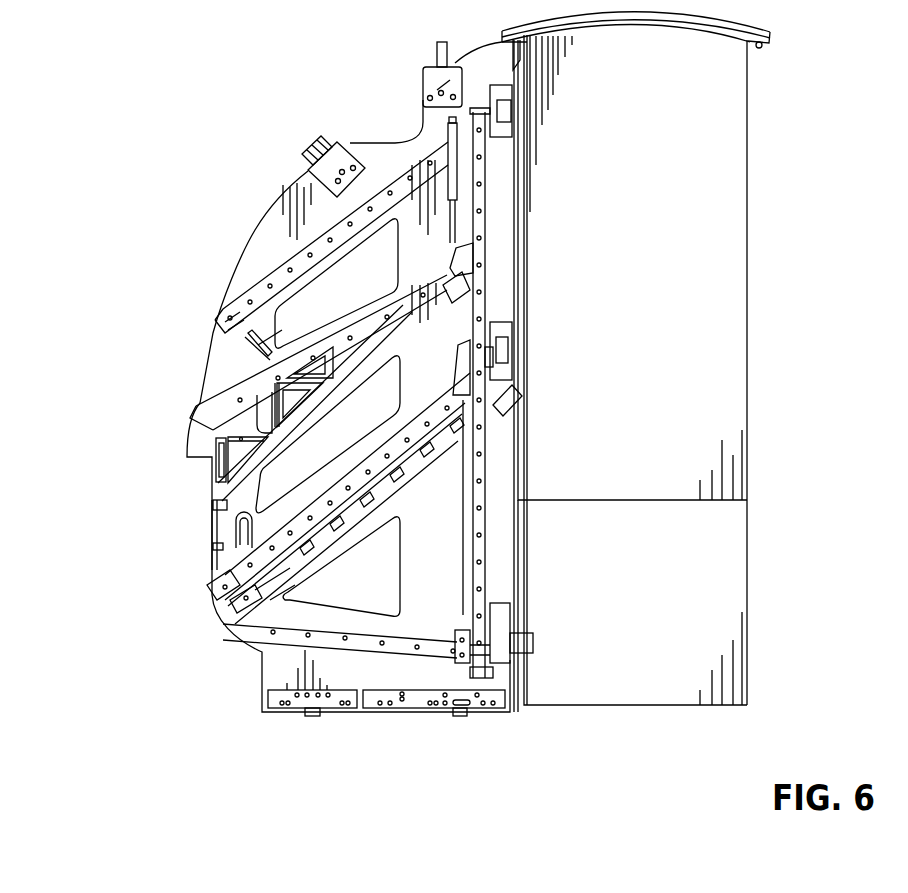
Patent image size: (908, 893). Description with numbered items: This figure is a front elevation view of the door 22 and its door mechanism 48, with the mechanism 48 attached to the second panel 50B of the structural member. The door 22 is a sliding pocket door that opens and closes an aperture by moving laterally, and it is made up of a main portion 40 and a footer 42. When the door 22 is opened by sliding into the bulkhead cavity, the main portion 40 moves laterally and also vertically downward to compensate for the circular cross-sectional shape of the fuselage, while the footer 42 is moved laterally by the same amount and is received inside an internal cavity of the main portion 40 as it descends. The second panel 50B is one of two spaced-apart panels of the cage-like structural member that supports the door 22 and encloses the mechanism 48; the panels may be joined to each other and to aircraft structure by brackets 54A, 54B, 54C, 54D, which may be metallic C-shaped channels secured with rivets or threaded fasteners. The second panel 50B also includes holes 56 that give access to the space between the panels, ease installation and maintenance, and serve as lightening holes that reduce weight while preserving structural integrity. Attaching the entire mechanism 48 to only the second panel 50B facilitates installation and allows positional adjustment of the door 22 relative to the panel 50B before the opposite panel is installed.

The door 22 is at (748, 147).
The main portion 40 is at (659, 208).
The footer 42 is at (659, 611).
The door mechanism 48 is at (262, 254).
The second panel 50B is at (238, 370).
The bracket 54A is at (440, 78).
The bracket 54B is at (328, 172).
The bracket 54C is at (436, 709).
The bracket 54D is at (288, 709).
The holes 56 is at (280, 637).